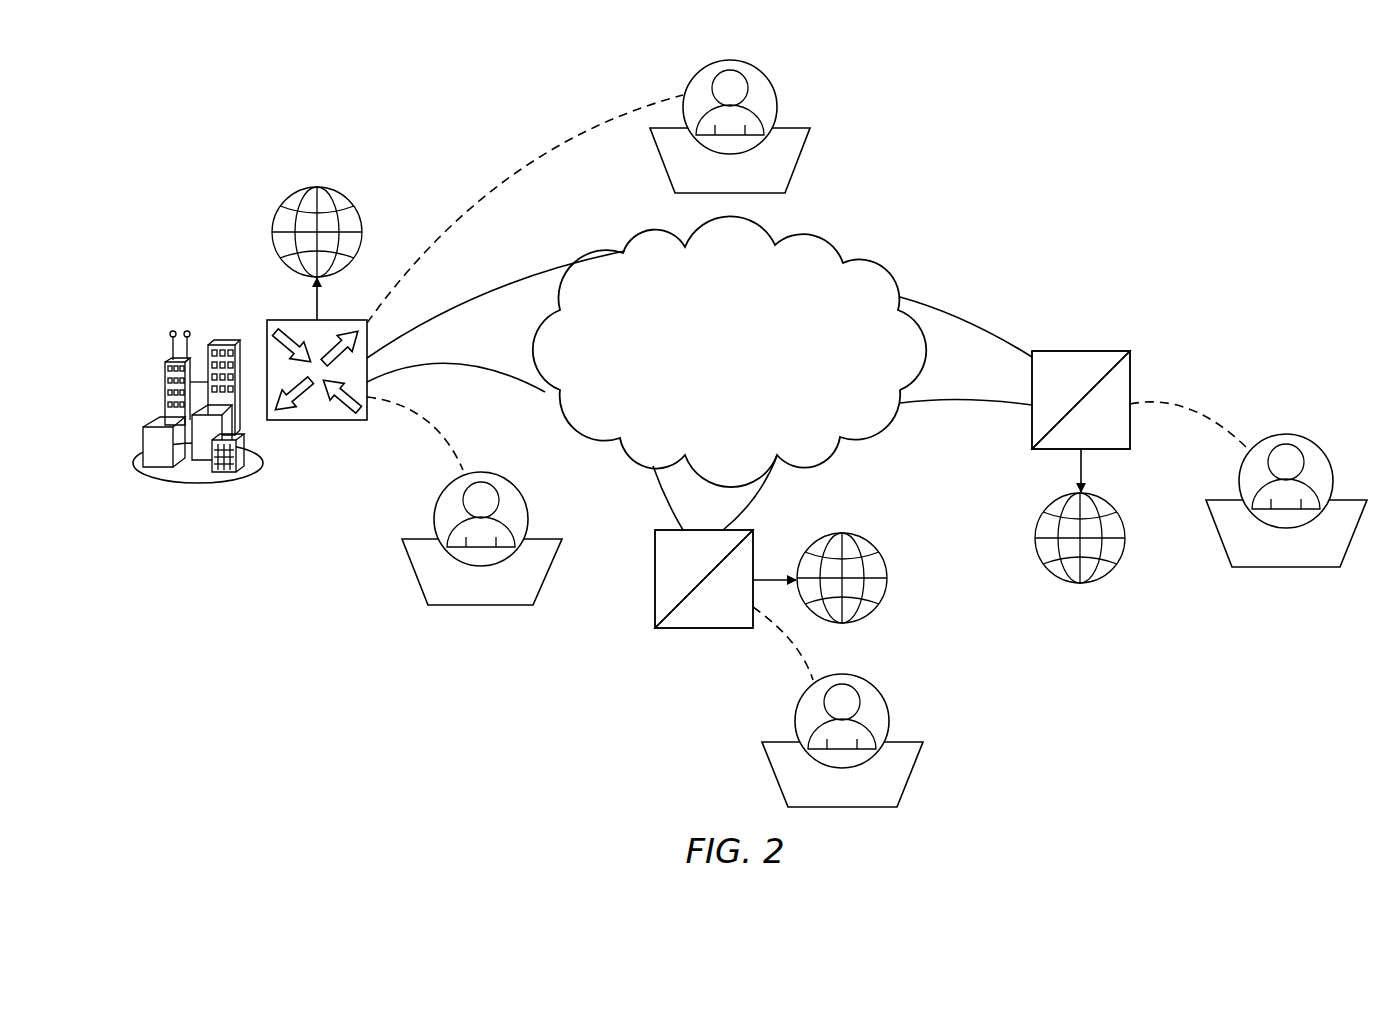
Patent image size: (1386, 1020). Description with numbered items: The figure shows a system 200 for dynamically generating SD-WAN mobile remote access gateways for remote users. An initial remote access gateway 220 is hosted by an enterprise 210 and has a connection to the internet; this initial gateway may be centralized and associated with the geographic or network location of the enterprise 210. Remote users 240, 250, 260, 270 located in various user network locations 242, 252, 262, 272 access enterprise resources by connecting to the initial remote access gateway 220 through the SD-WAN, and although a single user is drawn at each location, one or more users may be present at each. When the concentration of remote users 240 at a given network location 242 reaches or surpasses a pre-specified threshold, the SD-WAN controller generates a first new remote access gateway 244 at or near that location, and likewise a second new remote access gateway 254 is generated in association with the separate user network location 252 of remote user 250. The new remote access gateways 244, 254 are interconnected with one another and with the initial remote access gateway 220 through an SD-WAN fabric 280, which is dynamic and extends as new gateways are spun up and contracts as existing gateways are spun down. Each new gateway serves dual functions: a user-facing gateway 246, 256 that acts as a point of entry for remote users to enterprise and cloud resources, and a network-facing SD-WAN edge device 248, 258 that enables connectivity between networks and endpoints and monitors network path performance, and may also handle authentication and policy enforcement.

The system 200 is at (1056, 167).
The enterprise 210 is at (163, 378).
The initial remote access gateway 220 is at (289, 320).
The remote user 240 is at (886, 692).
The user network location 242 is at (910, 780).
The first new remote access gateway 244 is at (655, 580).
The user-facing gateway 246 is at (704, 579).
The network-facing SD-WAN edge device 248 is at (704, 579).
The remote user 250 is at (1316, 443).
The user network location 252 is at (1300, 567).
The second new remote access gateway 254 is at (1131, 368).
The user-facing gateway 256 is at (1081, 400).
The network-facing SD-WAN edge device 258 is at (1081, 400).
The remote user 260 is at (521, 490).
The user network location 262 is at (414, 580).
The remote user 270 is at (778, 90).
The user network location 272 is at (800, 160).
The SD-WAN fabric 280 is at (832, 247).